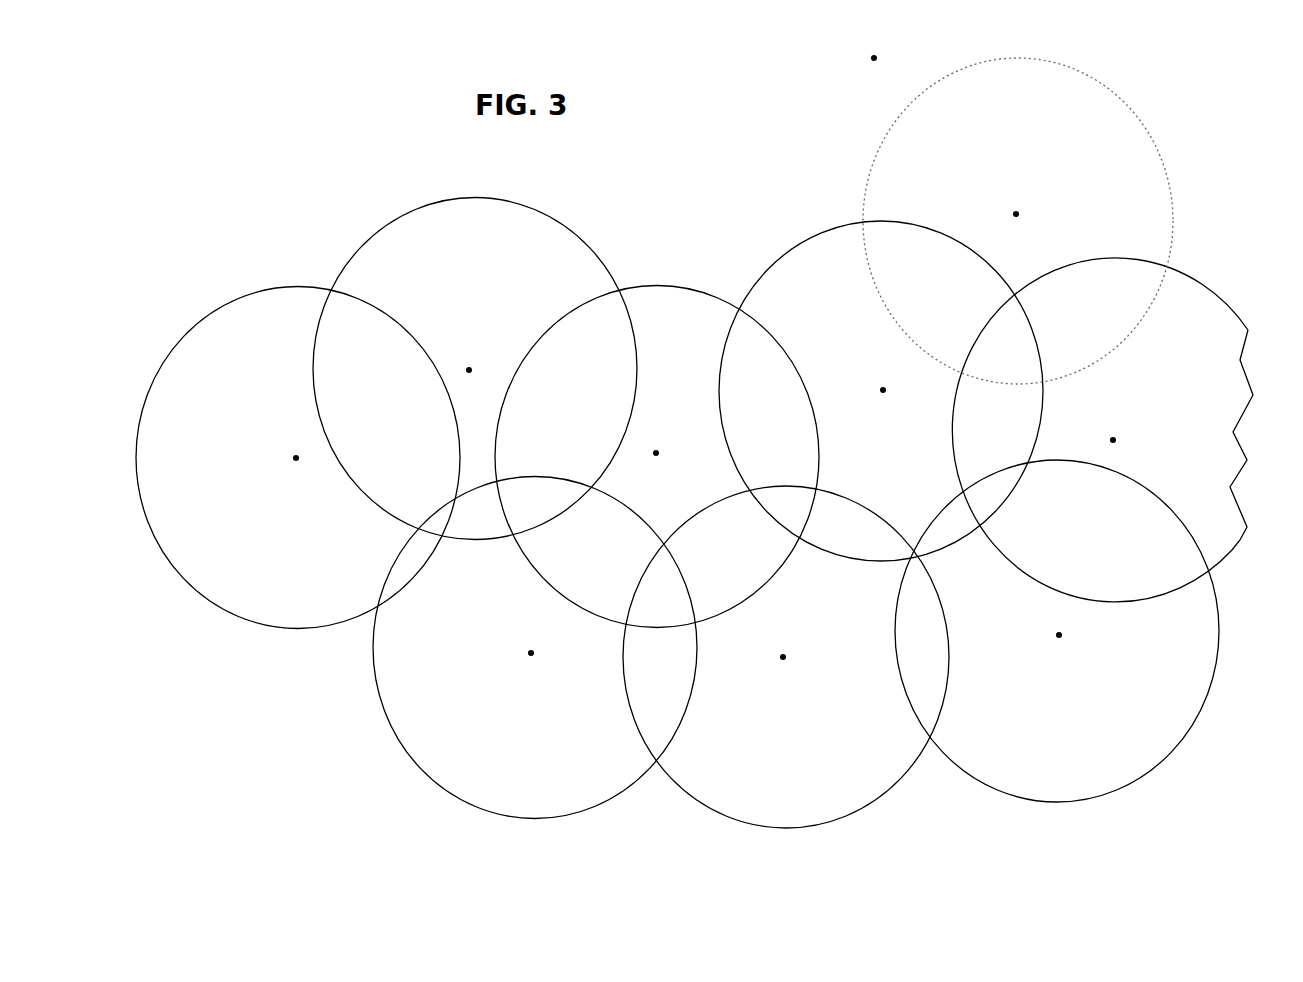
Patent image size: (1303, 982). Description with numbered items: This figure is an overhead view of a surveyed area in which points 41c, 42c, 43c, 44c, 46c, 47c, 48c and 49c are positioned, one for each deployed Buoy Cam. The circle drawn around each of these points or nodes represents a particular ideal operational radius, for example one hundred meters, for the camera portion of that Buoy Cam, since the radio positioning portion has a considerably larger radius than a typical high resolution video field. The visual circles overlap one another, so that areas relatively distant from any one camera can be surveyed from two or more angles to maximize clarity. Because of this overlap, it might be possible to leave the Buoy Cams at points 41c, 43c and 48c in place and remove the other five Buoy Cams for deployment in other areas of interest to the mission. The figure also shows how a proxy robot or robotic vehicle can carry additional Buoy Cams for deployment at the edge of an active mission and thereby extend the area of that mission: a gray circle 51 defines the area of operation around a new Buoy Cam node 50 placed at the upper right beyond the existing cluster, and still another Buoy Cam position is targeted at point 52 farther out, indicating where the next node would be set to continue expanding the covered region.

The Buoy Cam point 41c is at (294, 455).
The Buoy Cam point 42c is at (469, 367).
The Buoy Cam point 43c is at (659, 456).
The Buoy Cam point 44c is at (529, 656).
The Buoy Cam point 46c is at (886, 387).
The Buoy Cam point 47c is at (1115, 437).
The Buoy Cam point 48c is at (1062, 638).
The Buoy Cam point 49c is at (783, 661).
The new Buoy Cam node 50 is at (1018, 212).
The gray circle 51 is at (871, 167).
The targeted Buoy Cam position 52 is at (871, 61).